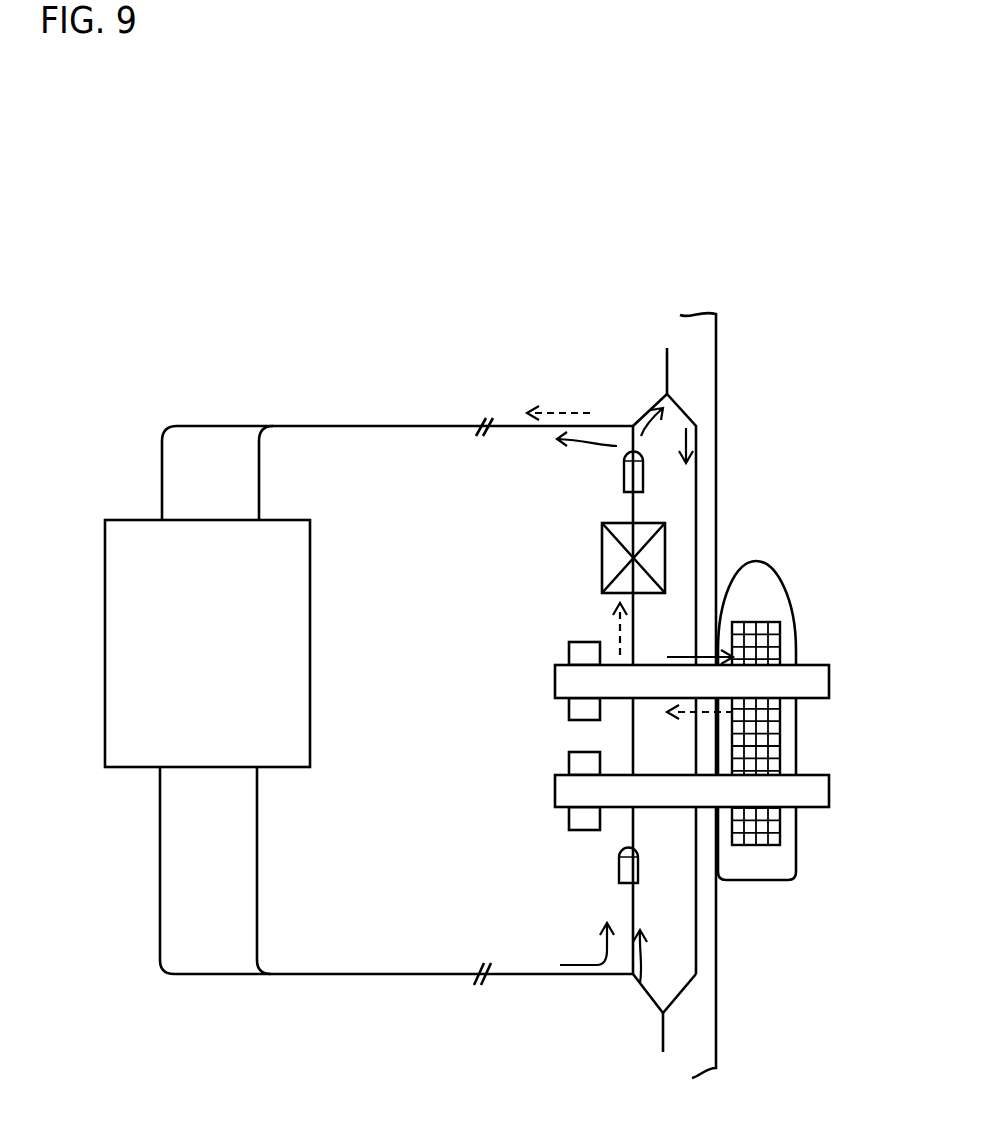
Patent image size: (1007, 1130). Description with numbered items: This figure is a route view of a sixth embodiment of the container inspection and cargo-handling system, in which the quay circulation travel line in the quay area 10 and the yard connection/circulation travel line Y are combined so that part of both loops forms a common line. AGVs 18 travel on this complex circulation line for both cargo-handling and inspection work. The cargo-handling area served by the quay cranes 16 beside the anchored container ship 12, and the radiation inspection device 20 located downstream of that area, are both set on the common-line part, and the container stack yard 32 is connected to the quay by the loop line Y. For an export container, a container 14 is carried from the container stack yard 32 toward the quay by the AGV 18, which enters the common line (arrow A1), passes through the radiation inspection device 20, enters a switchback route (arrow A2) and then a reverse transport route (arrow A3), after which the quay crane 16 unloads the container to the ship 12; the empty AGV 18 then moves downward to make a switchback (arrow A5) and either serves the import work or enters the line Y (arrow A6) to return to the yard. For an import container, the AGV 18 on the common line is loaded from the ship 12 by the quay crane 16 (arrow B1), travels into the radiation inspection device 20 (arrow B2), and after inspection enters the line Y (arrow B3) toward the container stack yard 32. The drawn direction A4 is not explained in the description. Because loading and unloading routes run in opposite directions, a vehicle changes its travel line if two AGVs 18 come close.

The quay area 10 is at (700, 1022).
The container ship 12 is at (780, 573).
The container 14 is at (782, 640).
The quay crane 16 is at (815, 687).
The AGV 18 is at (618, 868).
The radiation inspection device 20 is at (602, 555).
The container stack yard 32 is at (310, 703).
The arrow A1 is at (605, 960).
The arrow A2 is at (648, 420).
The arrow A3 is at (697, 442).
The vehicle travel direction A4 is at (672, 655).
The arrow A5 is at (637, 978).
The arrow A6 is at (592, 445).
The arrow B1 is at (700, 712).
The arrow B2 is at (610, 612).
The arrow B3 is at (553, 410).
The yard connection/circulation travel line Y is at (374, 975).